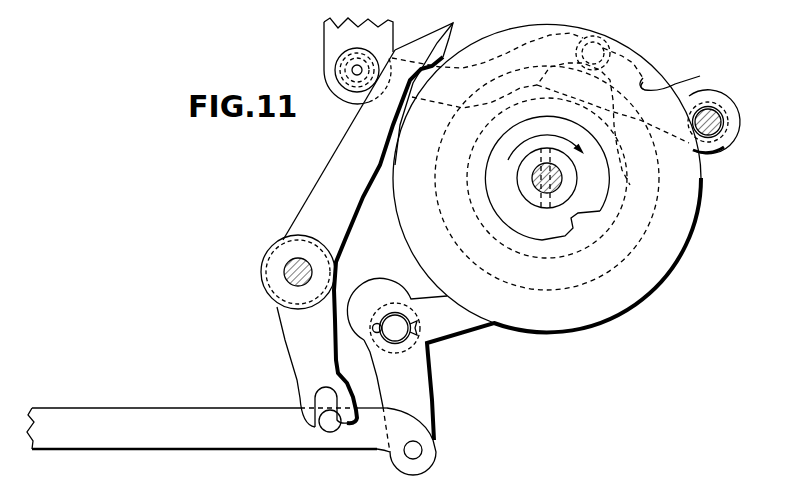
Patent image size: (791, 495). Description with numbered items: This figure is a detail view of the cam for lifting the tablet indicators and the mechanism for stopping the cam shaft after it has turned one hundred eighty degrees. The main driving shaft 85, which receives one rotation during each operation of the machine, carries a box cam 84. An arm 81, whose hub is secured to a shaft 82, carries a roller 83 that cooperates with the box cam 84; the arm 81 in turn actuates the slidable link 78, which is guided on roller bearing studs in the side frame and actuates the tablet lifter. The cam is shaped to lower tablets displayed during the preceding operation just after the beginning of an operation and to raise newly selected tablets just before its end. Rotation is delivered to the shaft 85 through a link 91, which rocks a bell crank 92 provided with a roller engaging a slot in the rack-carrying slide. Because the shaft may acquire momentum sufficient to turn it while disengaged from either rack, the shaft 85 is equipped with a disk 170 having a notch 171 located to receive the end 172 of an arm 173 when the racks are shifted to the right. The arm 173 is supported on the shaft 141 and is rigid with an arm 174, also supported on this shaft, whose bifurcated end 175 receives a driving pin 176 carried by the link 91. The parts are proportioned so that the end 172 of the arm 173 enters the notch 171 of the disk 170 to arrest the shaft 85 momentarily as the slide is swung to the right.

The slidable link 78 is at (328, 43).
The arm 81 is at (566, 173).
The shaft 82 is at (716, 135).
The roller 83 is at (607, 62).
The box cam 84 is at (666, 82).
The main driving shaft 85 is at (556, 184).
The link 91 is at (205, 450).
The bell crank 92 is at (413, 371).
The rock shaft 141 is at (300, 270).
The disk 170 is at (597, 166).
The notch 171 is at (570, 232).
The end of arm 172 is at (450, 36).
The arm 173 is at (331, 164).
The arm 174 is at (298, 332).
The bifurcated end 175 is at (303, 401).
The driving pin 176 is at (330, 432).